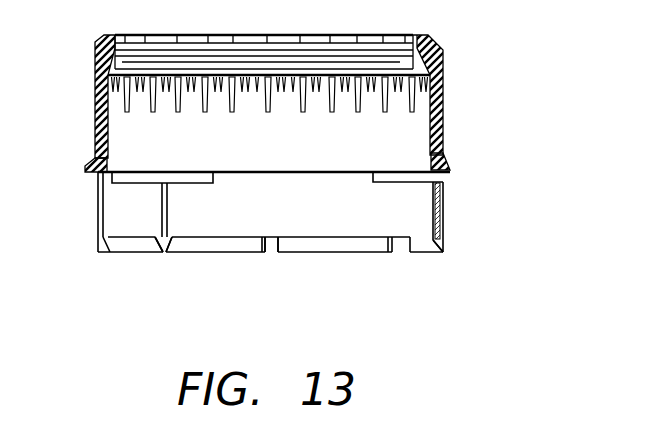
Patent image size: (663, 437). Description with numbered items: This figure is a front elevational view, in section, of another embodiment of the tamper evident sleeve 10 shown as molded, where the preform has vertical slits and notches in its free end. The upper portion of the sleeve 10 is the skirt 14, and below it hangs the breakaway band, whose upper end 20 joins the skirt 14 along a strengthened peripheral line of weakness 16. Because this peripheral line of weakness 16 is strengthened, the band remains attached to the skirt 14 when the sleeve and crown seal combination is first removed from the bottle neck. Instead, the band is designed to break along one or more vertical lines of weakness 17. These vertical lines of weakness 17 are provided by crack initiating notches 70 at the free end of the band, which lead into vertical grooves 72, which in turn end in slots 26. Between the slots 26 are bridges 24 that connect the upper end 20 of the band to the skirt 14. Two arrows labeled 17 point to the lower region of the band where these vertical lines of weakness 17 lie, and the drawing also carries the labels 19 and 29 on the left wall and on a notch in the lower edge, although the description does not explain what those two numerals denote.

The sleeve 10 is at (470, 36).
The skirt 14 is at (445, 90).
The peripheral line of weakness 16 is at (462, 181).
The vertical lines of weakness 17 is at (174, 277).
The left side wall 19 is at (98, 208).
The upper end 20 is at (442, 198).
The bridges 24 is at (305, 187).
The slots 26 is at (190, 175).
The notch 29 is at (268, 243).
The crack initiating notches 70 is at (163, 254).
The vertical grooves 72 is at (433, 211).